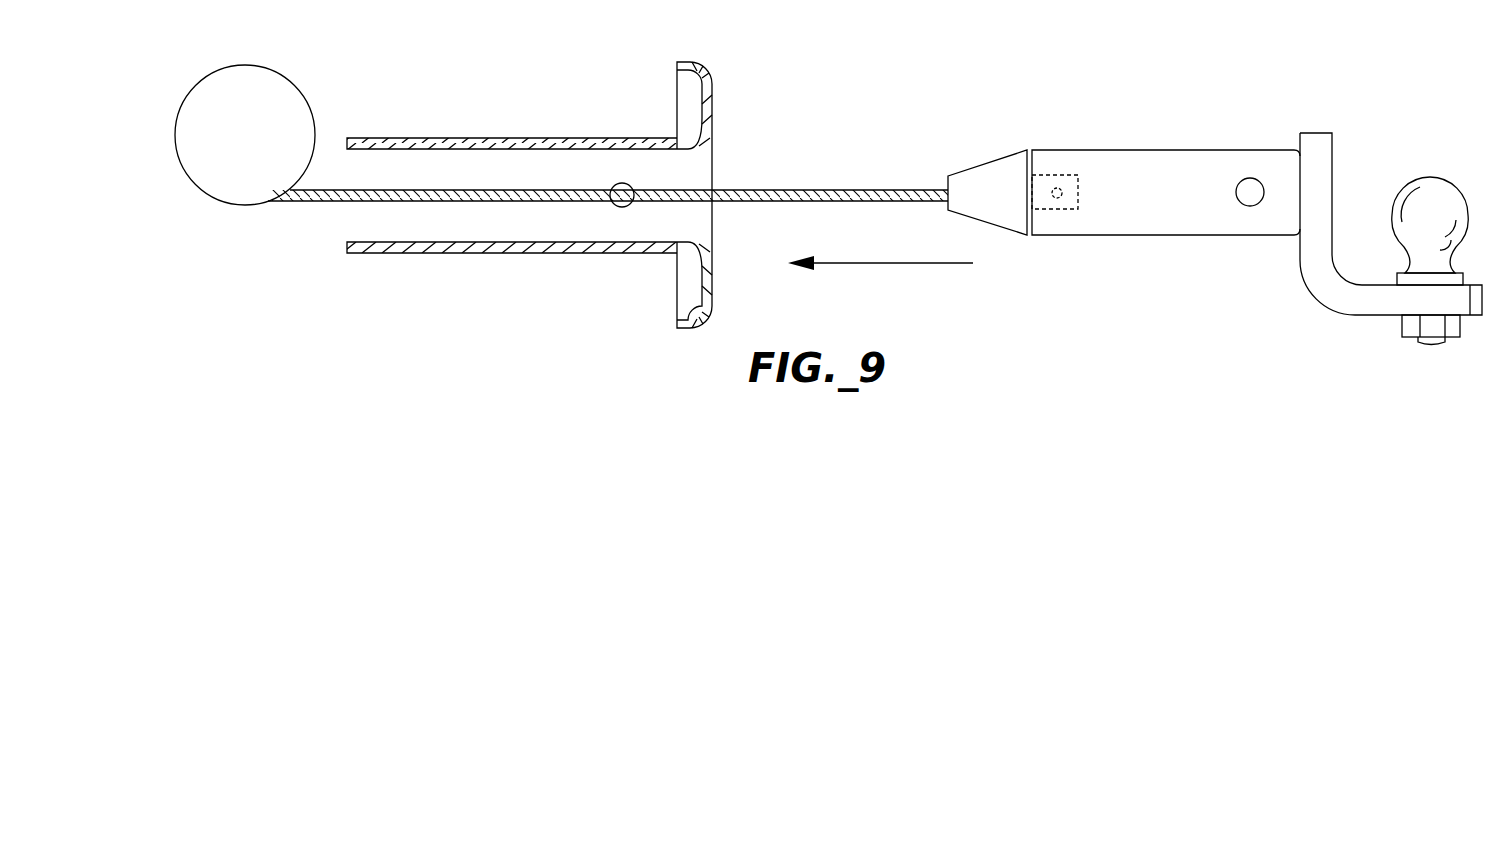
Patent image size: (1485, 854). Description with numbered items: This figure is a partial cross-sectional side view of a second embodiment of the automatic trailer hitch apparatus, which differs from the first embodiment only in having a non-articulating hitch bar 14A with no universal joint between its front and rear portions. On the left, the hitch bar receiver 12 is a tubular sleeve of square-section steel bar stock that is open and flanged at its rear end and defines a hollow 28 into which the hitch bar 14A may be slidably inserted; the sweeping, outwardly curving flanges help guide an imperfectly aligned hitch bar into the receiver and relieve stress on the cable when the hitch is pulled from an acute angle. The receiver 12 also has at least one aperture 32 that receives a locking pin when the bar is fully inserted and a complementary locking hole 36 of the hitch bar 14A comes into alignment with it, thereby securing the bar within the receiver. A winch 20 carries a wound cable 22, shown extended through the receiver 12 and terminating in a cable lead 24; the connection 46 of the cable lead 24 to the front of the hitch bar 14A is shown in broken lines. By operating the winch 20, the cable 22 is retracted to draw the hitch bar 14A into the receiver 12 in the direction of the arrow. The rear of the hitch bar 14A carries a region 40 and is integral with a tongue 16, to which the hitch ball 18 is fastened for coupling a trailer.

The winch 20 is at (286, 98).
The cable 22 is at (318, 204).
The hitch bar receiver 12 is at (494, 157).
The aperture 32 is at (622, 183).
The hollow 28 is at (734, 158).
The cable lead 24 is at (992, 170).
The non-articulating hitch bar 14A is at (1160, 252).
The connection 46 is at (1065, 175).
The locking hole 36 is at (1250, 206).
The shank end 40 is at (1240, 158).
The tongue 16 is at (1332, 297).
The hitch ball 18 is at (1437, 183).